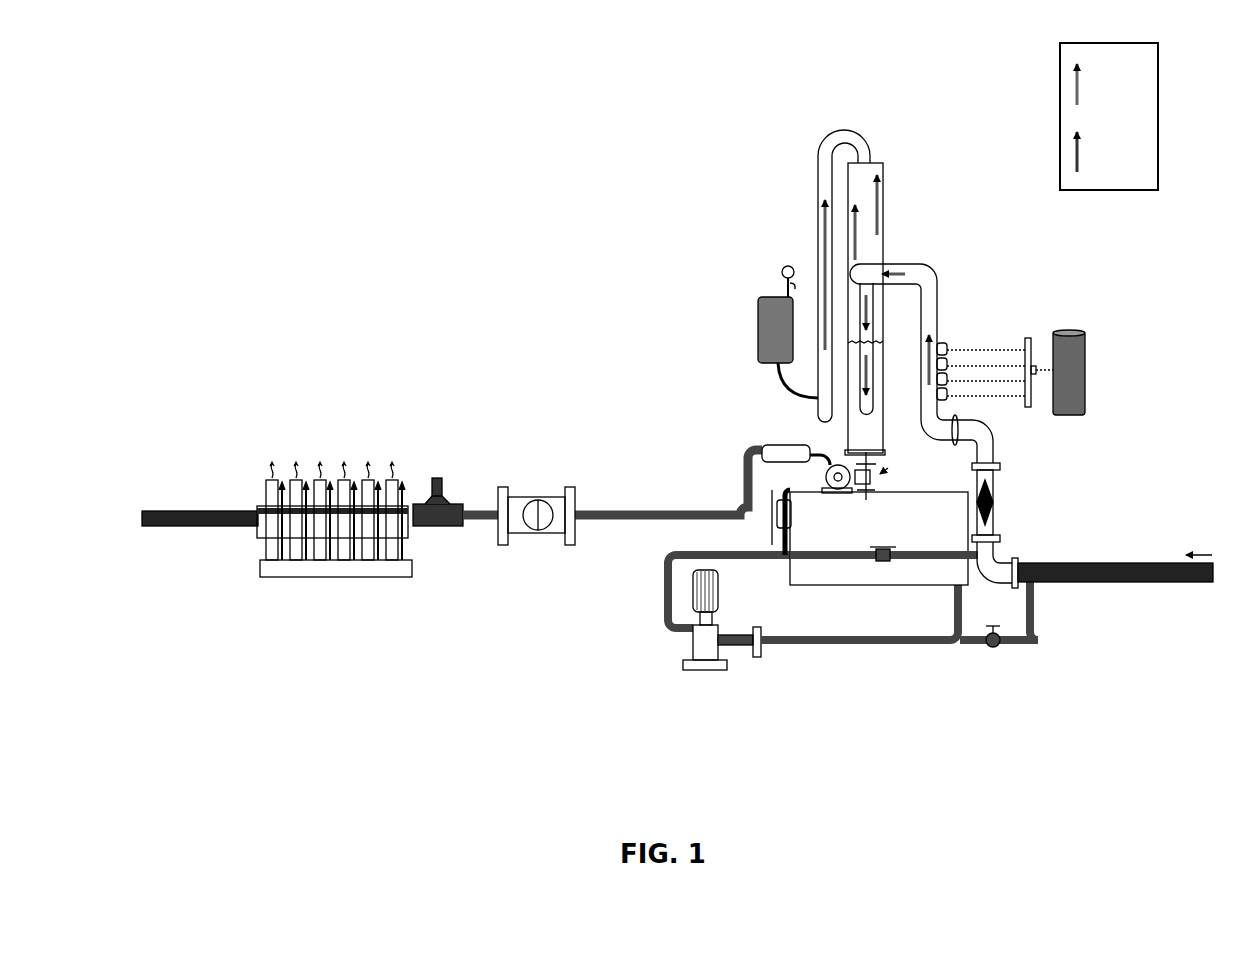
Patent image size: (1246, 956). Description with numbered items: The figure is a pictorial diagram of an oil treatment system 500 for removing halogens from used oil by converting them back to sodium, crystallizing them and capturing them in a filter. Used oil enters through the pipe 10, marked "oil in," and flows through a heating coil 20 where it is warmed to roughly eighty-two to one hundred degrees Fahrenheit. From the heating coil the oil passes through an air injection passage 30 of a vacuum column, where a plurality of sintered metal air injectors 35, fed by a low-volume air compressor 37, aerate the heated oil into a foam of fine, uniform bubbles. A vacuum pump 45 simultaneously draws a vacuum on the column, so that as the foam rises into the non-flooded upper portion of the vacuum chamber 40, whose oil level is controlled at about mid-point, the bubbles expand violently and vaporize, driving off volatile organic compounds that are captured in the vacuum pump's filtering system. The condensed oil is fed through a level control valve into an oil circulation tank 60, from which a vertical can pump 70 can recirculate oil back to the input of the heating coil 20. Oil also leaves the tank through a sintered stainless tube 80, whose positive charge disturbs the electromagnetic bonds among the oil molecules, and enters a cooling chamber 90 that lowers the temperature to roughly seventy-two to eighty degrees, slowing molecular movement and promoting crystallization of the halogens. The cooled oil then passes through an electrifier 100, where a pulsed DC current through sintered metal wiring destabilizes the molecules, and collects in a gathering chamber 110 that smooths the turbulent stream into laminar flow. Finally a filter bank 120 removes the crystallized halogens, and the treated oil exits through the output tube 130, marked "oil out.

The oil treatment system 500 is at (640, 77).
The pipe 10 is at (1165, 562).
The heating coil 20 is at (996, 498).
The air injection passage 30 is at (937, 283).
The sintered metal air injectors 35 is at (945, 345).
The low-volume air compressor 37 is at (1086, 345).
The vacuum chamber 40 is at (884, 230).
The vacuum pump 45 is at (757, 310).
The oil circulation tank 60 is at (840, 576).
The vertical can pump 70 is at (718, 674).
The sintered stainless tube 80 is at (780, 447).
The cooling chamber 90 is at (540, 485).
The electrifier 100 is at (417, 510).
The gathering chamber 110 is at (260, 540).
The filter bank 120 is at (305, 565).
The output tube 130 is at (215, 516).